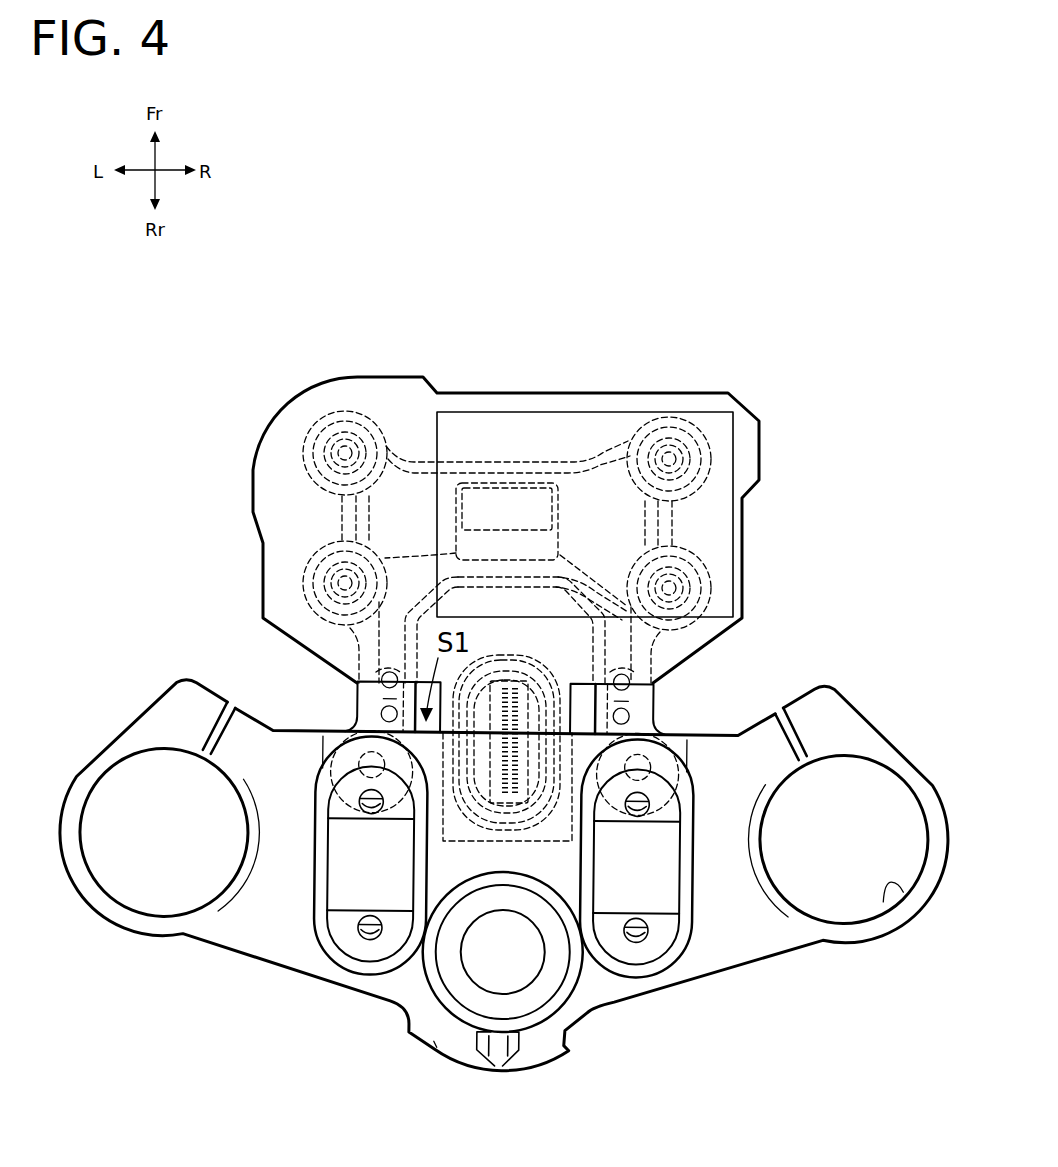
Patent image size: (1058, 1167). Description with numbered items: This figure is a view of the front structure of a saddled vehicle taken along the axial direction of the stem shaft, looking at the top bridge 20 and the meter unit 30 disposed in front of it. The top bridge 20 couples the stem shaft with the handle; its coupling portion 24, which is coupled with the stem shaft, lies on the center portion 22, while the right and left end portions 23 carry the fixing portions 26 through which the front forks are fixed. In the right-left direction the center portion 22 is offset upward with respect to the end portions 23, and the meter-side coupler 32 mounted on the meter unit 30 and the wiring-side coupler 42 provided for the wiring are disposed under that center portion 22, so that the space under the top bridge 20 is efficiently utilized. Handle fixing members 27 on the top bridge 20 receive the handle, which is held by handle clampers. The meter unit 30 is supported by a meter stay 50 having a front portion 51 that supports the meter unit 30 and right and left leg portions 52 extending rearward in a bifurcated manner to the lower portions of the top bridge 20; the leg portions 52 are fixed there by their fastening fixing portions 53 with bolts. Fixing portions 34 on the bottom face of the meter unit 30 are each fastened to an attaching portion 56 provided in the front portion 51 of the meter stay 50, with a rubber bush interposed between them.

The top bridge 20 is at (847, 695).
The center portion 22 is at (558, 808).
The right and left end portions 23 is at (135, 915).
The coupling portion 24 is at (550, 977).
The fixing portions 26 is at (885, 898).
The handle fixing members 27 is at (320, 900).
The meter unit 30 is at (257, 457).
The meter-side coupler 32 is at (525, 559).
The wiring-side coupler 42 is at (510, 668).
The fixing portions 34 is at (689, 459).
The meter stay 50 is at (347, 413).
The front portion 51 is at (672, 524).
The leg portions 52 is at (355, 702).
The fastening fixing portions 53 is at (358, 768).
The attaching portion 56 is at (690, 448).